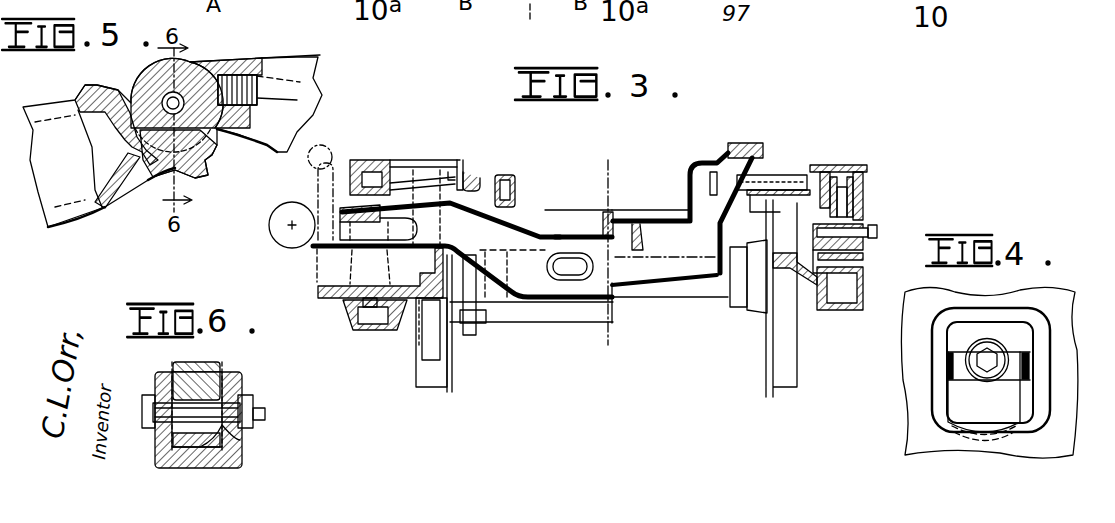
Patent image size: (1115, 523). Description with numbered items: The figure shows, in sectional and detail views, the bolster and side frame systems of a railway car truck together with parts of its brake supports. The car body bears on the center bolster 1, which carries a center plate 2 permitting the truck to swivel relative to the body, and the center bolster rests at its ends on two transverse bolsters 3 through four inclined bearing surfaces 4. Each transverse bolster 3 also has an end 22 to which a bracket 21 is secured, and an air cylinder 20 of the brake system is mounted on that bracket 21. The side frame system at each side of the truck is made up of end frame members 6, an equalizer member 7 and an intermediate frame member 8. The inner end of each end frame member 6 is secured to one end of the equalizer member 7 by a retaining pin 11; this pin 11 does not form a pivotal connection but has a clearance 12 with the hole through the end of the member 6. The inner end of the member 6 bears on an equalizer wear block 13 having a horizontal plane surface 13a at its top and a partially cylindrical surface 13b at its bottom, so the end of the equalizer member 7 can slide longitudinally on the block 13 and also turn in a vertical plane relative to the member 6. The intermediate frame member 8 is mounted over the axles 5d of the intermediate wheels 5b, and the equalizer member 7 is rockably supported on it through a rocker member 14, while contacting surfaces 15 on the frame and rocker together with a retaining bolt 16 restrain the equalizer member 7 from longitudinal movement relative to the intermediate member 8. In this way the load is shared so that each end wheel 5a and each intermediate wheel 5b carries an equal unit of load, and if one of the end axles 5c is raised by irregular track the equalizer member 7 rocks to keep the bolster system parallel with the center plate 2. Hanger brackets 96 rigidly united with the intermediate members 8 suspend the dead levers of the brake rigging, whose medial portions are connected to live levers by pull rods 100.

In FIG. 3, the center bolster 1 is at (563, 230).
In FIG. 3, the center plate 2 is at (640, 213).
In FIG. 3, the transverse bolsters 3 is at (577, 300).
In FIG. 3, the inclined bearing surfaces 4 is at (523, 210).
In FIG. 3, the end wheel 5a is at (433, 378).
In FIG. 3, the intermediate wheels 5b is at (774, 360).
In FIG. 3, the end axles 5c is at (487, 325).
In FIG. 3, the axles of the intermediate wheels 5d is at (697, 296).
In FIG. 5, the end frame members 6 is at (283, 85).
In FIG. 6, the end frame members 6 is at (187, 362).
In FIG. 3, the end frame members 6 is at (373, 163).
In FIG. 5, the equalizer member 7 is at (47, 163).
In FIG. 6, the equalizer member 7 is at (163, 455).
In FIG. 3, the equalizer member 7 is at (865, 212).
In FIG. 3, the intermediate frame member 8 is at (867, 182).
In FIG. 4, the intermediate frame member 8 is at (902, 334).
In FIG. 5, the retaining pin 11 is at (177, 100).
In FIG. 6, the retaining pin 11 is at (263, 412).
In FIG. 5, the clearance 12 is at (192, 103).
In FIG. 6, the clearance 12 is at (223, 361).
In FIG. 5, the equalizer wear block 13 is at (220, 162).
In FIG. 6, the equalizer wear block 13 is at (240, 440).
In FIG. 5, the horizontal plane surface 13a is at (258, 100).
In FIG. 6, the horizontal plane surface 13a is at (247, 455).
In FIG. 5, the partially cylindrical surface 13b is at (147, 193).
In FIG. 3, the rocker member 14 is at (863, 255).
In FIG. 4, the rocker member 14 is at (958, 405).
In FIG. 4, the contacting surfaces 15 is at (945, 368).
In FIG. 3, the retaining bolt 16 is at (878, 230).
In FIG. 4, the retaining bolt 16 is at (987, 360).
In FIG. 3, the air cylinder 20 is at (270, 232).
In FIG. 3, the bracket 21 is at (347, 143).
In FIG. 3, the end of transverse bolster 22 is at (325, 249).
In FIG. 3, the hanger brackets 96 is at (780, 183).
In FIG. 3, the pull rods 100 is at (472, 172).